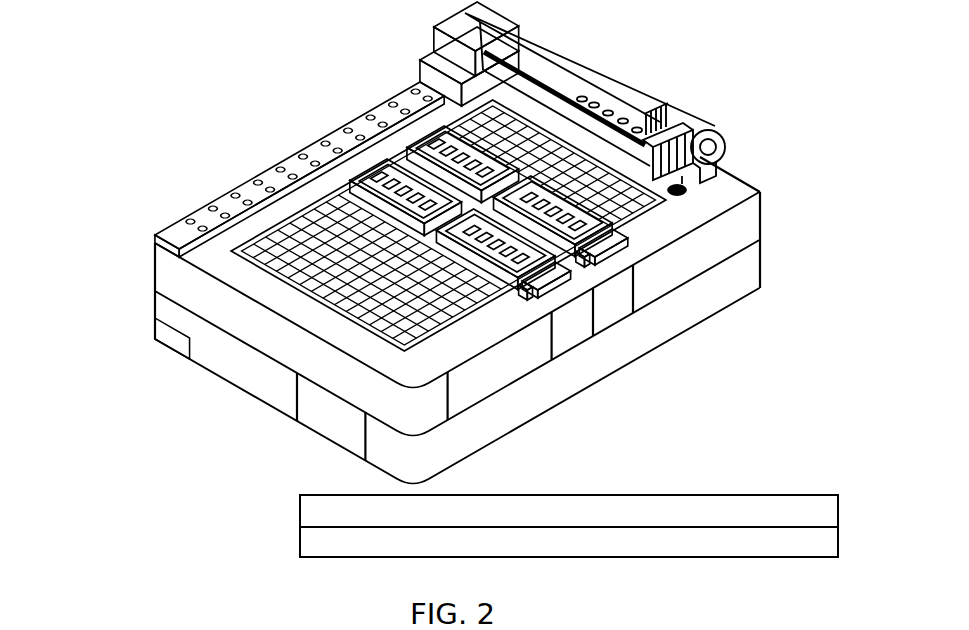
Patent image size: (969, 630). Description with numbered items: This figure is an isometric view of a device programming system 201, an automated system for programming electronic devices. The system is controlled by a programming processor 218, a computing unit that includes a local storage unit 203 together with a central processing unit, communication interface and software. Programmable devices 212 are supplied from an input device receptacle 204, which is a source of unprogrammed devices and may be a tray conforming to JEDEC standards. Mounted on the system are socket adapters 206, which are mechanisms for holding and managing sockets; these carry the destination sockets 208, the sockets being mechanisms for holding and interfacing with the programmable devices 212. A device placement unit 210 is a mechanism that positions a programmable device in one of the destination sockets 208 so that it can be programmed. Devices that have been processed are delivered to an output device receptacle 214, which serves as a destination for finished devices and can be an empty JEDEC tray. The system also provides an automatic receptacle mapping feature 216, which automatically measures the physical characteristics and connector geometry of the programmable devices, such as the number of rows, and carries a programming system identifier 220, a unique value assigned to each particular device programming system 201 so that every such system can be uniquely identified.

The device programming system 201 is at (222, 52).
The local storage unit 203 is at (170, 340).
The input device receptacle 204 is at (254, 277).
The socket adapters 206 is at (600, 270).
The destination sockets 208 is at (378, 202).
The device placement unit 210 is at (695, 108).
The programmable devices 212 is at (694, 198).
The output device receptacle 214 is at (639, 232).
The automatic receptacle mapping feature 216 is at (265, 410).
The programming processor 218 is at (221, 360).
The programming system identifier 220 is at (265, 412).